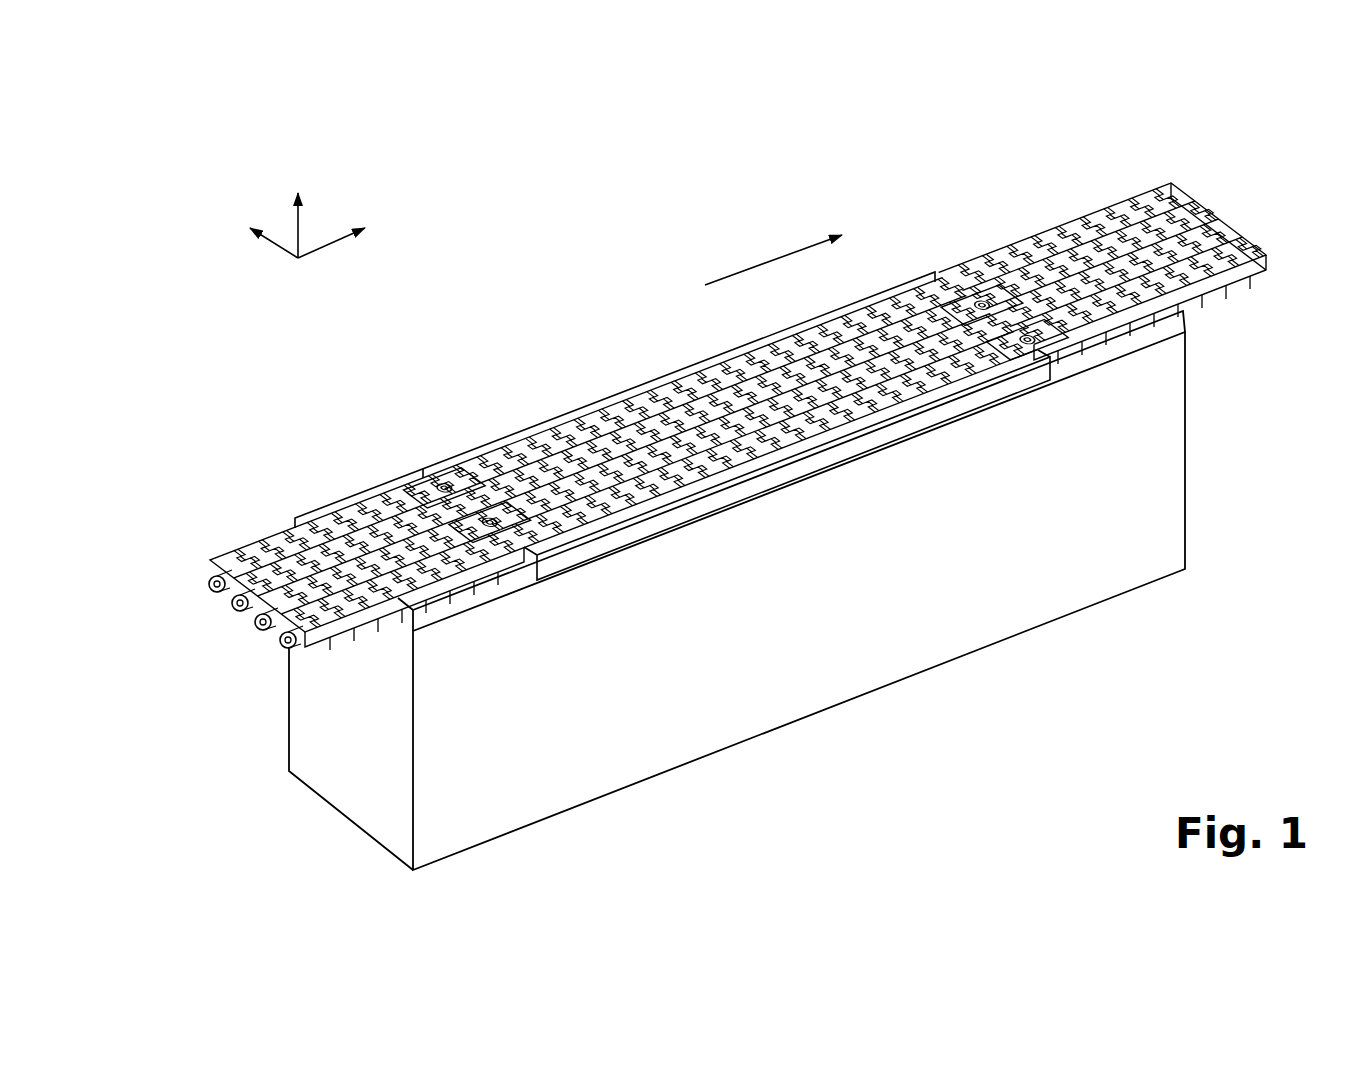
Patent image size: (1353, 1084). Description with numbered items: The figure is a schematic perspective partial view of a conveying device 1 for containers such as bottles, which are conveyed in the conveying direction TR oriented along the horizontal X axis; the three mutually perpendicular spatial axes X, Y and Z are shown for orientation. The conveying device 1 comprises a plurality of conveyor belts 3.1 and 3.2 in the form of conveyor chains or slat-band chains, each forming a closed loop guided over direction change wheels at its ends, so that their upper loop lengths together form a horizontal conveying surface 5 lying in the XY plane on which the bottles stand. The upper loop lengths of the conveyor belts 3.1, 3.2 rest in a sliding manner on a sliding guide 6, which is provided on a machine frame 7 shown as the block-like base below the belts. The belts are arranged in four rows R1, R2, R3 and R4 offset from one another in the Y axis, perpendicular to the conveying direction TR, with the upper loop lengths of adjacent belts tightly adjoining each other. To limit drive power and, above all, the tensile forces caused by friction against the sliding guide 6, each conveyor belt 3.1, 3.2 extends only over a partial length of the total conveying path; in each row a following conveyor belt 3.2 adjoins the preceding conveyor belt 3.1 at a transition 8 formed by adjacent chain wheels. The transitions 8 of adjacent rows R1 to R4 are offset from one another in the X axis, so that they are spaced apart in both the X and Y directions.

The conveying device 1 is at (612, 223).
The conveyor belt 3.1 is at (322, 569).
The conveyor belt 3.2 is at (1172, 282).
The conveying surface 5 is at (632, 402).
The sliding guide 6 is at (975, 398).
The machine frame 7 is at (828, 636).
The transition 8 is at (505, 518).
The row R1 is at (188, 590).
The row R2 is at (215, 611).
The row R3 is at (235, 627).
The row R4 is at (260, 650).